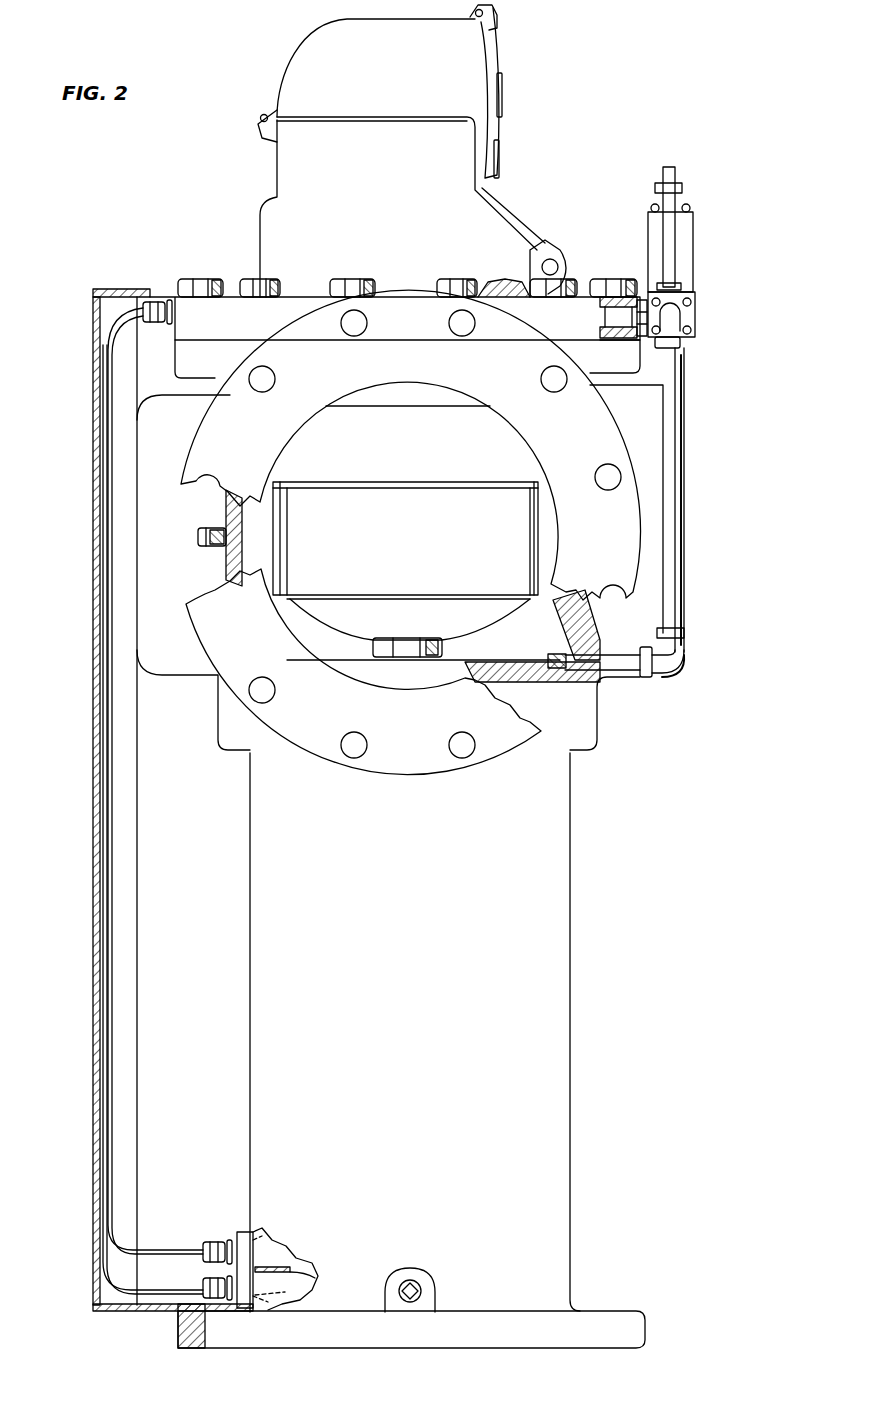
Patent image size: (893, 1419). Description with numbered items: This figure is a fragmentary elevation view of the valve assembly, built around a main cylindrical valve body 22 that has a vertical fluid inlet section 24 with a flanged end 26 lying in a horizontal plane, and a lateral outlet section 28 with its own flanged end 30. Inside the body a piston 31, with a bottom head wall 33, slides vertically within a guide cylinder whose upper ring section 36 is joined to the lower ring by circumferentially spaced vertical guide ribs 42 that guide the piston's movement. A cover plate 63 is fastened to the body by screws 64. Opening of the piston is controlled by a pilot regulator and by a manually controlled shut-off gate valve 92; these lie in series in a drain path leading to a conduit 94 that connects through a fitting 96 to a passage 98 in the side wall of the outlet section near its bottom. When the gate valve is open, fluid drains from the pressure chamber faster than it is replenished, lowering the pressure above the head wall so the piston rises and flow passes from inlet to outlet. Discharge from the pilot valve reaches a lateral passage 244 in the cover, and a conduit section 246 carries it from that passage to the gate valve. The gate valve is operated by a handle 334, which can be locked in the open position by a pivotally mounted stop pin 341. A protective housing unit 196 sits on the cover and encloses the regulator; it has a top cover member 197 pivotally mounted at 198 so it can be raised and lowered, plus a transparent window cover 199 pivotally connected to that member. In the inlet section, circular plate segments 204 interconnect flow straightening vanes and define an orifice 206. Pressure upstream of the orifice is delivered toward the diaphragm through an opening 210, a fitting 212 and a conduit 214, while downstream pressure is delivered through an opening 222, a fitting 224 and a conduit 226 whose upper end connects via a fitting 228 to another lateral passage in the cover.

The main cylindrical valve body 22 is at (648, 404).
The vertical fluid inlet section 24 is at (413, 856).
The flanged end 26 is at (596, 1310).
The lateral outlet section 28 is at (572, 605).
The flanged end 30 is at (607, 531).
The piston 31 is at (414, 530).
The bottom head wall 33 is at (362, 628).
The upper ring section 36 is at (419, 461).
The vertical guide ribs 42 is at (283, 545).
The cover plate 63 is at (238, 320).
The screws 64 is at (336, 283).
The shut-off gate valve 92 is at (705, 266).
The conduit 94 is at (684, 470).
The fitting 96 is at (620, 680).
The passage 98 is at (545, 683).
The protective housing unit 196 is at (405, 202).
The top cover member 197 is at (315, 45).
The pivot 198 is at (258, 115).
The transparent window cover 199 is at (497, 70).
The circular plate segments 204 is at (312, 1280).
The orifice 206 is at (282, 1267).
The opening 210 is at (278, 1298).
The fitting 212 is at (205, 1282).
The conduit 214 is at (108, 1284).
The opening 222 is at (260, 1234).
The fitting 224 is at (213, 1242).
The conduit 226 is at (130, 1242).
The fitting 228 is at (155, 324).
The lateral passage 244 is at (615, 337).
The conduit section 246 is at (646, 300).
The handle 334 is at (675, 248).
The stop pin 341 is at (660, 285).